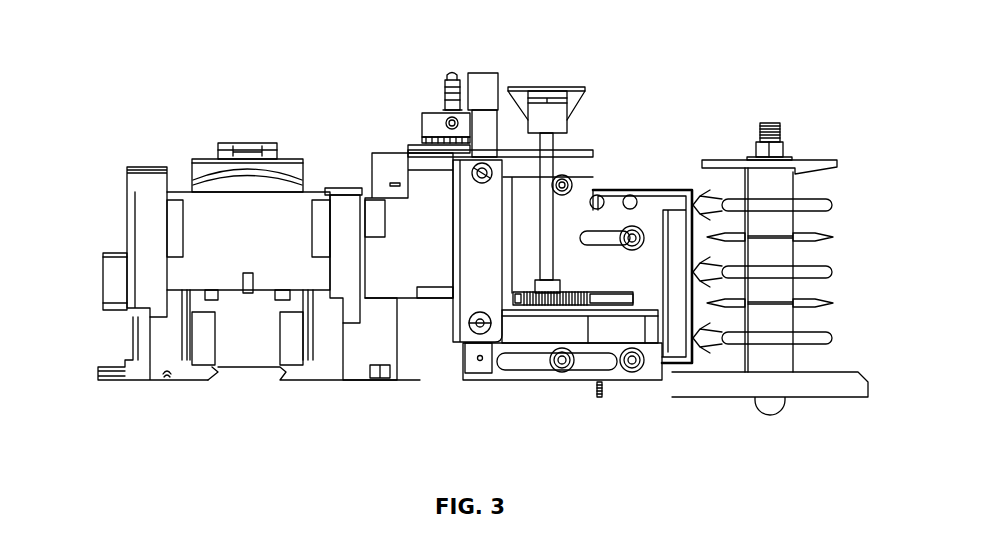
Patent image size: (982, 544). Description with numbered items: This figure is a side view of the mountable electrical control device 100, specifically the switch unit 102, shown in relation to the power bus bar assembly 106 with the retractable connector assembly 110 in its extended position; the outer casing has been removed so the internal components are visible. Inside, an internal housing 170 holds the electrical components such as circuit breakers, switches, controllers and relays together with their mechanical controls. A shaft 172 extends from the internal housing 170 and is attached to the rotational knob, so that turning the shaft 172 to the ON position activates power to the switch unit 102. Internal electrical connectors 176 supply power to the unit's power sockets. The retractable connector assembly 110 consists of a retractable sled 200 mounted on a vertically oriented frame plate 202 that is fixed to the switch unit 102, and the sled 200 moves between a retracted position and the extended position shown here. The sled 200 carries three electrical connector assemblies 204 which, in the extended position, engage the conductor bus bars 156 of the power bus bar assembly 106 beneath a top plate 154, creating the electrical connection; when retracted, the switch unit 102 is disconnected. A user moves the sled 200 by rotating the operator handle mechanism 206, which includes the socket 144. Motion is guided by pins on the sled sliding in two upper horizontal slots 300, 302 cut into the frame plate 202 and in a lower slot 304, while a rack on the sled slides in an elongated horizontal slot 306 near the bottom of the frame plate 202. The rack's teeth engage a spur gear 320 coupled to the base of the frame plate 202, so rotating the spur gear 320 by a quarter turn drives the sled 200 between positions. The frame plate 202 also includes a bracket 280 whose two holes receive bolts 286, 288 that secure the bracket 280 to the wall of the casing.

The dispensing system 100 is at (758, 43).
The switch unit 102 is at (343, 190).
The power bus bar assembly 106 is at (800, 160).
The retractable connector assembly 110 is at (567, 183).
The socket 144 is at (547, 86).
The top plate 154 is at (813, 187).
The conductor bus bars 156 is at (843, 207).
The internal housing 170 is at (243, 217).
The shaft 172 is at (448, 72).
The internal electrical connectors 176 is at (127, 231).
The retractable sled 200 is at (690, 188).
The frame plate 202 is at (643, 306).
The electrical connector assemblies 204 is at (716, 335).
The operator handle mechanism 206 is at (575, 87).
The bracket 280 is at (480, 228).
The bolt 286 is at (457, 160).
The bolt 288 is at (478, 335).
The upper horizontal slot 300 is at (522, 190).
The upper horizontal slot 302 is at (605, 238).
The lower slot 304 is at (536, 361).
The elongated horizontal slot 306 is at (580, 306).
The spur gear 320 is at (547, 305).